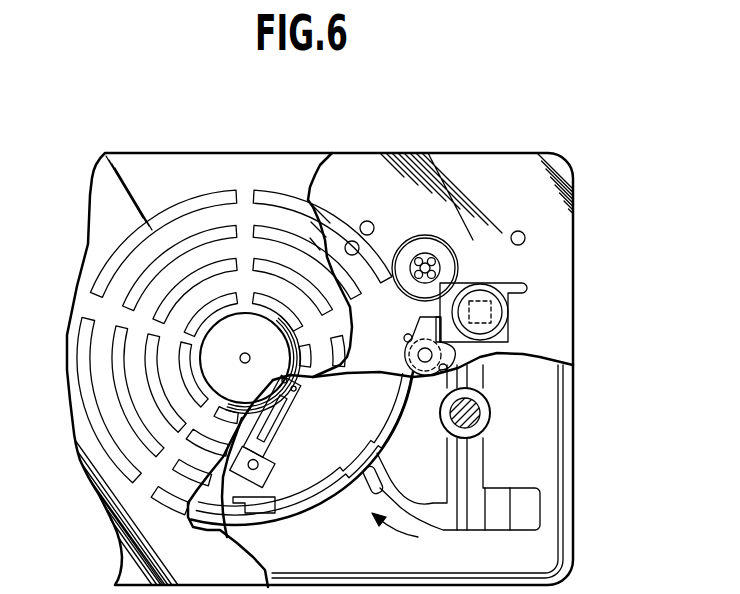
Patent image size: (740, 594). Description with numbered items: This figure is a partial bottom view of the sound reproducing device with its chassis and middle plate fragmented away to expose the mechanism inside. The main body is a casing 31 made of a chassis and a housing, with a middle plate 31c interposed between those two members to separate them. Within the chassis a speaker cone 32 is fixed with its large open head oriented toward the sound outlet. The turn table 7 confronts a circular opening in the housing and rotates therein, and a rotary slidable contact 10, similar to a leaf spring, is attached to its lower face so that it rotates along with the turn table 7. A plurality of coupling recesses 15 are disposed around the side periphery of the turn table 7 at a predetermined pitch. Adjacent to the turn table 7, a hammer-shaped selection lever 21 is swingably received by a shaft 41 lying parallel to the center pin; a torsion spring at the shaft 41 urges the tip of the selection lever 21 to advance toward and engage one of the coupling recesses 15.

The turn table 7 is at (307, 500).
The rotary slidable contact 10 is at (302, 448).
The coupling recesses 15 is at (262, 513).
The selection lever 21 is at (444, 513).
The casing 31 is at (575, 222).
The middle plate 31c is at (464, 173).
The speaker cone 32 is at (205, 530).
The shaft 41 is at (478, 412).